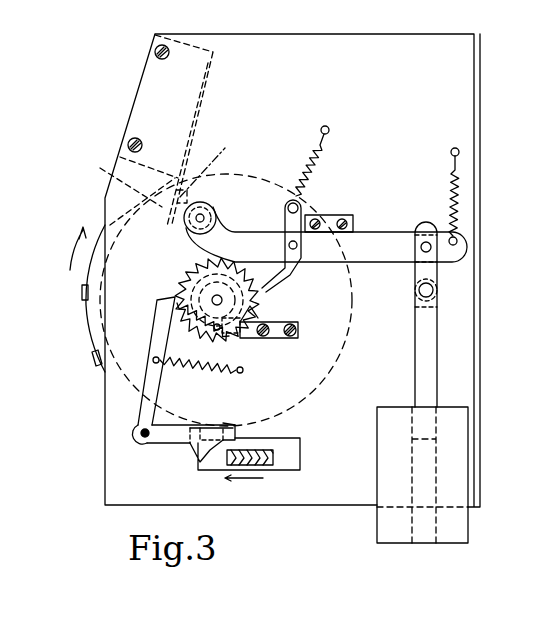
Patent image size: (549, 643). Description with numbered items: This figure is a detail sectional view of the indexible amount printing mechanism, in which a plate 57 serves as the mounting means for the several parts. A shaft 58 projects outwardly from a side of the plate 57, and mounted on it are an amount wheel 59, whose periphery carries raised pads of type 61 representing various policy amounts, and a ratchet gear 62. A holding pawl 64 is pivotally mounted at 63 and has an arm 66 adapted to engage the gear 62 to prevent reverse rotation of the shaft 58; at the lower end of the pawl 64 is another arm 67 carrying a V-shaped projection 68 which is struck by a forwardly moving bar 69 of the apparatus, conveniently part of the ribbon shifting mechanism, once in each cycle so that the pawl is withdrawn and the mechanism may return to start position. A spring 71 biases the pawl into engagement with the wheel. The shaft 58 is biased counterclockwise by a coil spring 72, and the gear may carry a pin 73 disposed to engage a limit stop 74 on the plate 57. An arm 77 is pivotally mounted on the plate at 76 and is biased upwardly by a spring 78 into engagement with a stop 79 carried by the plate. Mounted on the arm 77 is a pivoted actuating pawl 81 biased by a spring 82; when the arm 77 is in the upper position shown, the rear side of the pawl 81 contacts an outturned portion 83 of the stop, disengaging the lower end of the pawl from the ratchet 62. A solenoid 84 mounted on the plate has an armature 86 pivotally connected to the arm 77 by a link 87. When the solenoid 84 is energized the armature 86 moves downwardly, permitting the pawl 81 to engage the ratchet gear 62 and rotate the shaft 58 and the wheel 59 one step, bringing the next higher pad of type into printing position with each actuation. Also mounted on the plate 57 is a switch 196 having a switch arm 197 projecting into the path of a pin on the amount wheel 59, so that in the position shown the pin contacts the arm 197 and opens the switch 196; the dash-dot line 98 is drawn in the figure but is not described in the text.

The plate 57 is at (112, 476).
The shaft 58 is at (213, 298).
The amount wheel 59 is at (88, 328).
The raised pads of type 61 is at (80, 292).
The ratchet gear 62 is at (252, 302).
The pivot 63 is at (145, 437).
The holding pawl 64 is at (165, 403).
The arm 66 is at (153, 328).
The arm 67 is at (223, 423).
The V-shaped projection 68 is at (200, 464).
The bar 69 is at (273, 450).
The spring 71 is at (190, 365).
The coil spring 72 is at (162, 244).
The pin 73 is at (204, 342).
The limit stop 74 is at (258, 338).
The pivot 76 is at (202, 214).
The arm 77 is at (381, 253).
The spring 78 is at (452, 185).
The stop 79 is at (325, 214).
The actuating pawl 81 is at (297, 275).
The spring 82 is at (318, 152).
The outturned portion 83 is at (302, 212).
The solenoid 84 is at (377, 465).
The armature 86 is at (416, 362).
The link 87 is at (433, 270).
The line 98 is at (213, 165).
The switch 196 is at (215, 63).
The switch arm 197 is at (127, 178).